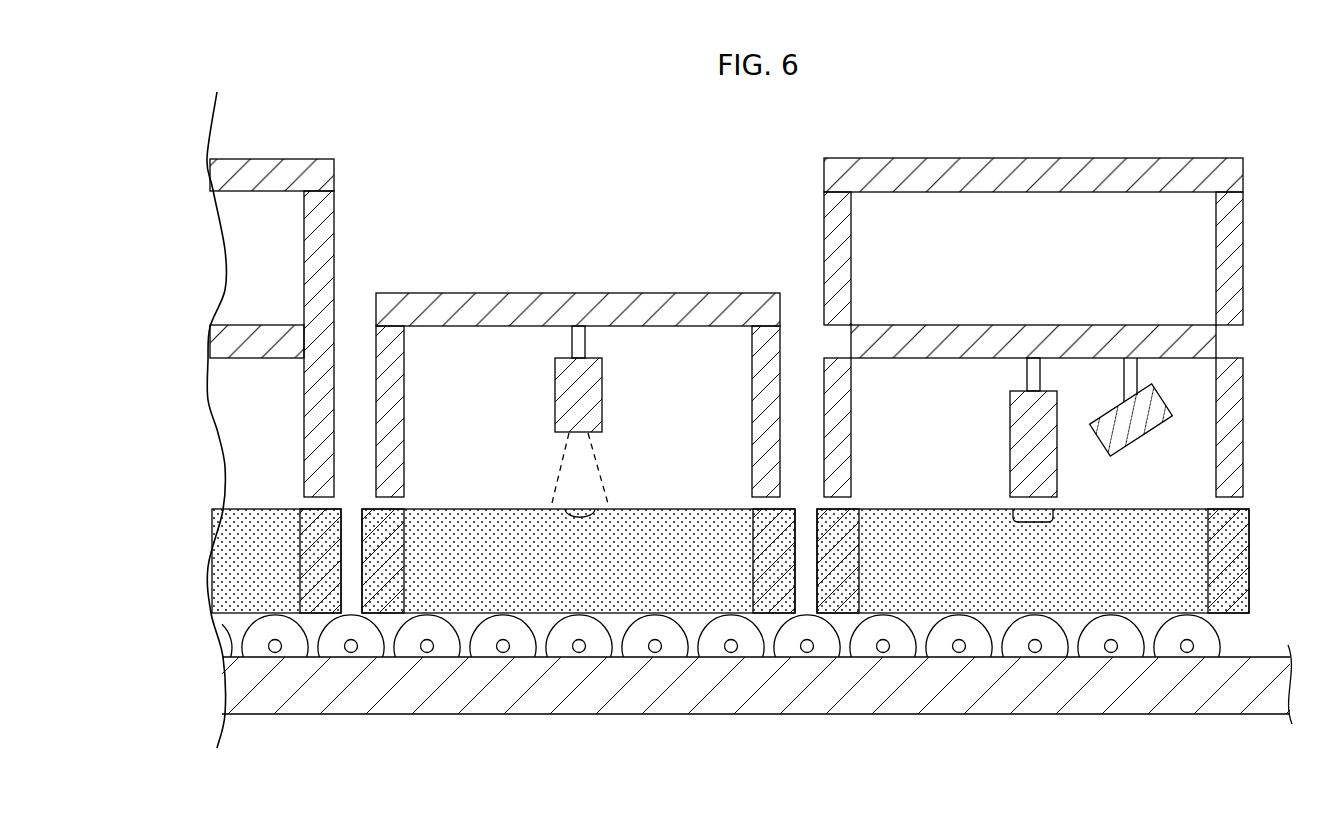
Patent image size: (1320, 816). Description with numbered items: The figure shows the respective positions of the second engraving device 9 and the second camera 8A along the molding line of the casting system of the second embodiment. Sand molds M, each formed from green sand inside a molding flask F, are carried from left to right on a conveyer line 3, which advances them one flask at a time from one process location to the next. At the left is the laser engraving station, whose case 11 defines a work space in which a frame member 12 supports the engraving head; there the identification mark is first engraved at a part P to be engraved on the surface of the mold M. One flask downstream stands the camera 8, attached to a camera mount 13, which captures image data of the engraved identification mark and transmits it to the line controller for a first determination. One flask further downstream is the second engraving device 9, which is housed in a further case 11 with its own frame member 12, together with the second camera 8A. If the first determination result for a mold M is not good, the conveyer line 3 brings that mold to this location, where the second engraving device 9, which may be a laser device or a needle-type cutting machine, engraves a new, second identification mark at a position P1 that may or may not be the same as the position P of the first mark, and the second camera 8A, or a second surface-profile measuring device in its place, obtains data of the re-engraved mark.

The case 11 is at (270, 158).
The frame member 12 is at (270, 325).
The camera mount 13 is at (694, 292).
The camera 8 is at (603, 400).
The second camera 8A is at (1145, 437).
The second engraving device 9 is at (1059, 442).
The conveyer line 3 is at (762, 715).
The mold M is at (693, 508).
The molding flask F is at (785, 508).
The part to be engraved P is at (578, 508).
The position of re-engraving P1 is at (1050, 512).